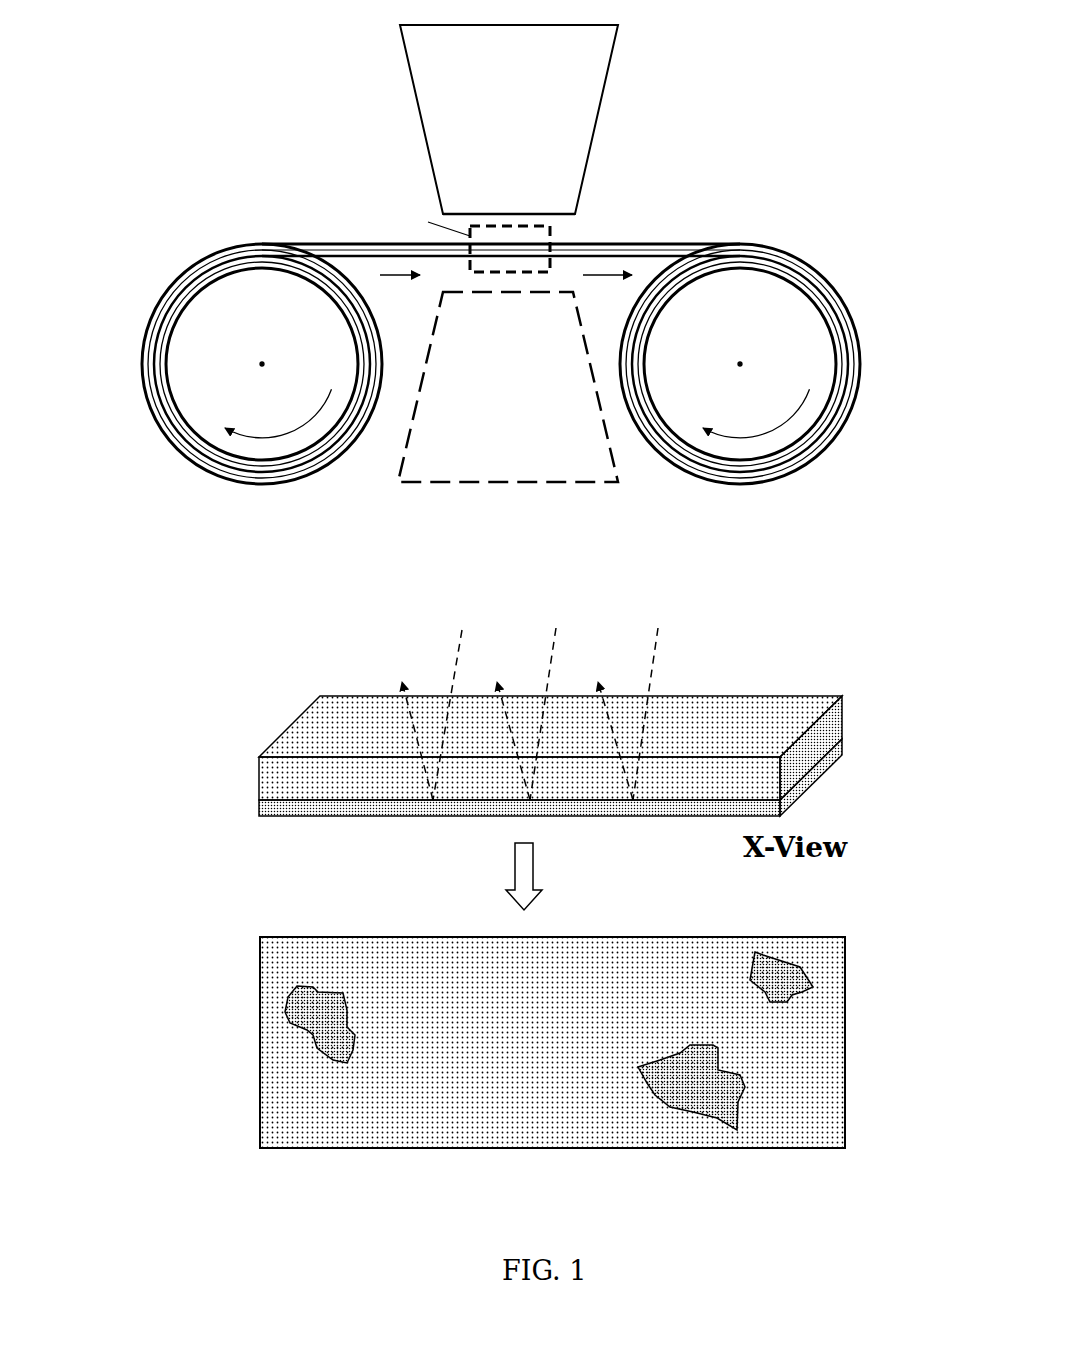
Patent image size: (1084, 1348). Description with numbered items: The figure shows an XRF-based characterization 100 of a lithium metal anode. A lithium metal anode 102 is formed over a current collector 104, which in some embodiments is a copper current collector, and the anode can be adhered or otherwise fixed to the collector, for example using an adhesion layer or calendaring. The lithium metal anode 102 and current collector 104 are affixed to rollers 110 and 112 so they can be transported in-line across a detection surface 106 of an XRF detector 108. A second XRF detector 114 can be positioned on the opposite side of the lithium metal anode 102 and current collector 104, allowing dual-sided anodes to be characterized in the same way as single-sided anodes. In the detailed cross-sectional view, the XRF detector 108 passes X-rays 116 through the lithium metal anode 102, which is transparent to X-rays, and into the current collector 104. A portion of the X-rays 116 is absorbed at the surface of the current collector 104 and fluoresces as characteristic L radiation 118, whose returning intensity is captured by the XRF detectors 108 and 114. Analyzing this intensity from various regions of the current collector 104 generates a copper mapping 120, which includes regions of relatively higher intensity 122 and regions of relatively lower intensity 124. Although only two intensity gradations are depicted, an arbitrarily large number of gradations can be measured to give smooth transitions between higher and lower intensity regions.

The XRF-based characterization 100 is at (150, 38).
The lithium metal anode 102 is at (305, 730).
The current collector 104 is at (263, 807).
The detection surface 106 is at (580, 213).
The XRF detector 108 is at (605, 97).
The roller 110 is at (263, 300).
The roller 112 is at (782, 315).
The second XRF detector 114 is at (509, 484).
The X-rays 116 is at (557, 700).
The characteristic L radiation 118 is at (504, 723).
The copper mapping 120 is at (190, 915).
The regions of relatively higher intensity 122 is at (300, 1005).
The regions of relatively lower intensity 124 is at (338, 950).